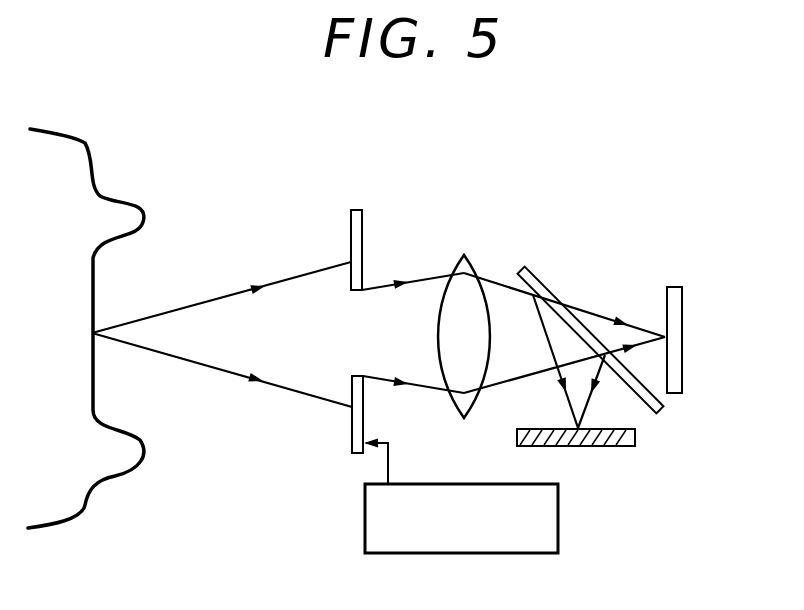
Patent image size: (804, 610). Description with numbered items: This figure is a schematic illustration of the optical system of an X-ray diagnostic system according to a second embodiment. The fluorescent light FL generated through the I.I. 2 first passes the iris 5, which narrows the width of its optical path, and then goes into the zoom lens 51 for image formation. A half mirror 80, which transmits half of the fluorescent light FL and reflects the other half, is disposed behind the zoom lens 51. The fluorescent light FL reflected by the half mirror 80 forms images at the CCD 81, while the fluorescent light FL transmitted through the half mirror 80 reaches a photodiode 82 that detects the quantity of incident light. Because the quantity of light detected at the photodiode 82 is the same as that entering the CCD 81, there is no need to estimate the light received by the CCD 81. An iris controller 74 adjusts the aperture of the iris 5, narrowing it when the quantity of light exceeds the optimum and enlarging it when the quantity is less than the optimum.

The I.I. 2 is at (83, 143).
The fluorescent light FL is at (200, 304).
The iris 5 is at (363, 222).
The zoom lens 51 is at (462, 268).
The half mirror 80 is at (538, 282).
The photodiode 82 is at (680, 292).
The CCD 81 is at (635, 437).
The iris controller 74 is at (365, 514).